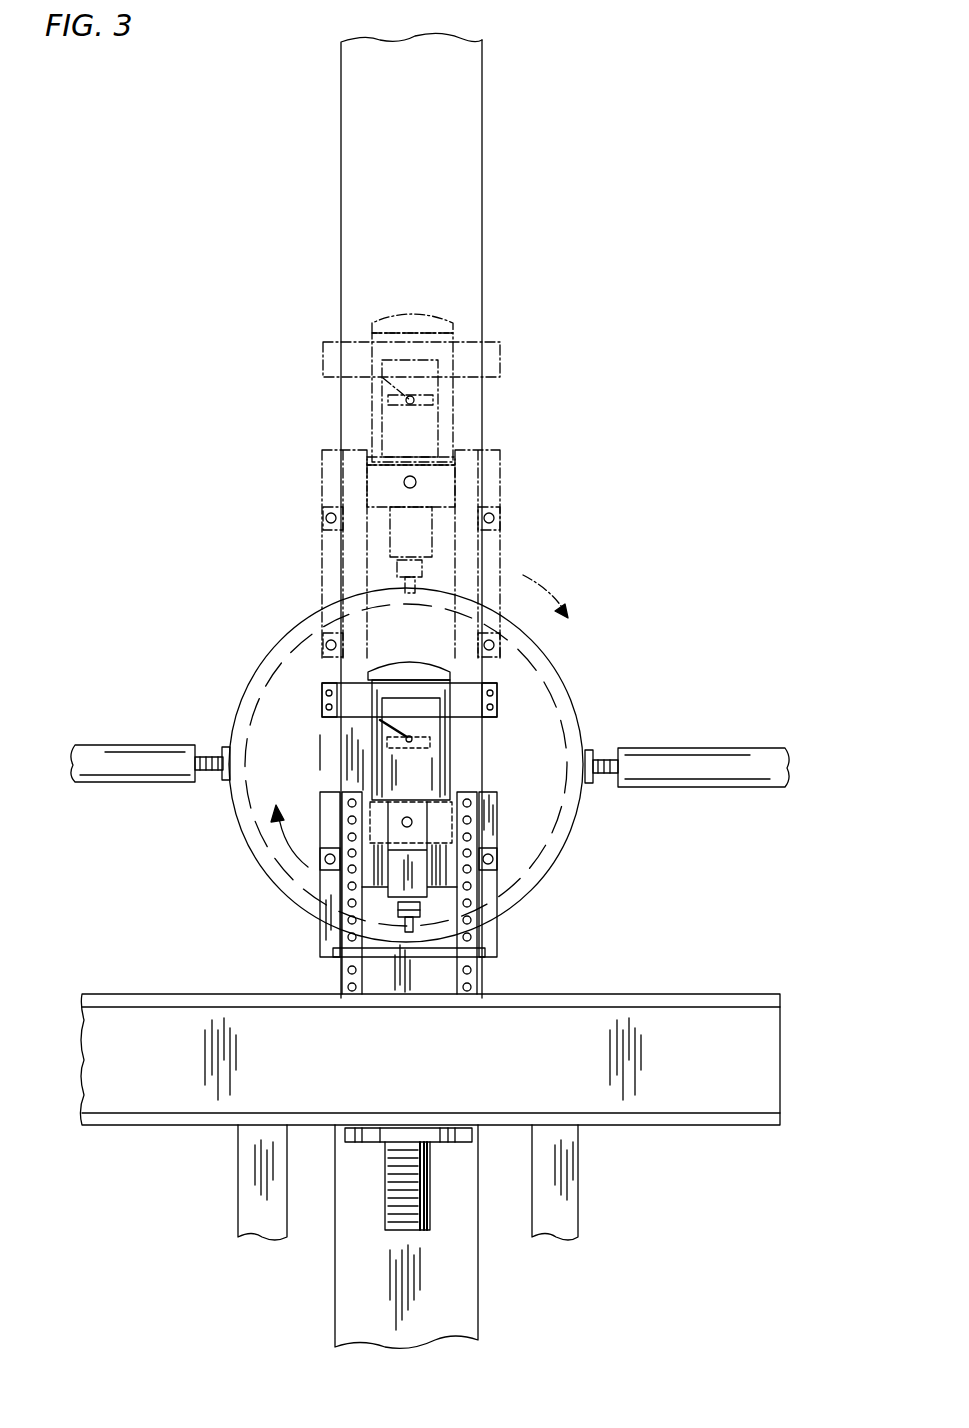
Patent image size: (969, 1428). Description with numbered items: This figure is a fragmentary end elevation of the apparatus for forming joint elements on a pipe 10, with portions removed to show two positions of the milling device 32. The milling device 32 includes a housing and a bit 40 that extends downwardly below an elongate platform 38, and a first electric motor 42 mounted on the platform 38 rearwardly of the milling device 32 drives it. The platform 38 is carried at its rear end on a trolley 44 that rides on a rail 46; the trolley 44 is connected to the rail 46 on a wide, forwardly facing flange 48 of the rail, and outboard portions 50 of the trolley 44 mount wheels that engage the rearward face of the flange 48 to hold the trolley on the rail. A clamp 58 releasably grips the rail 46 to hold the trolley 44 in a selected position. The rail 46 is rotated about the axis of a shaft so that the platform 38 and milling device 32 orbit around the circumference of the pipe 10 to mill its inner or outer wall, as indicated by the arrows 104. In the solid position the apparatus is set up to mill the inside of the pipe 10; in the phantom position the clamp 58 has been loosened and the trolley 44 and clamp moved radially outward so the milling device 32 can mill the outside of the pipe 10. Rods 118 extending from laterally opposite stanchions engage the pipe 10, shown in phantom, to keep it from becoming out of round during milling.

The first pipe 10 is at (256, 658).
The milling device 32 is at (368, 396).
The platform 38 is at (432, 845).
The bit 40 is at (397, 587).
The first electric motor 42 is at (388, 724).
The trolley 44 is at (508, 476).
The rail 46 is at (482, 57).
The flange 48 is at (465, 153).
The outboard portions 50 is at (493, 827).
The clamp 58 is at (502, 338).
The arrows 104 is at (292, 845).
The rods 118 is at (128, 745).